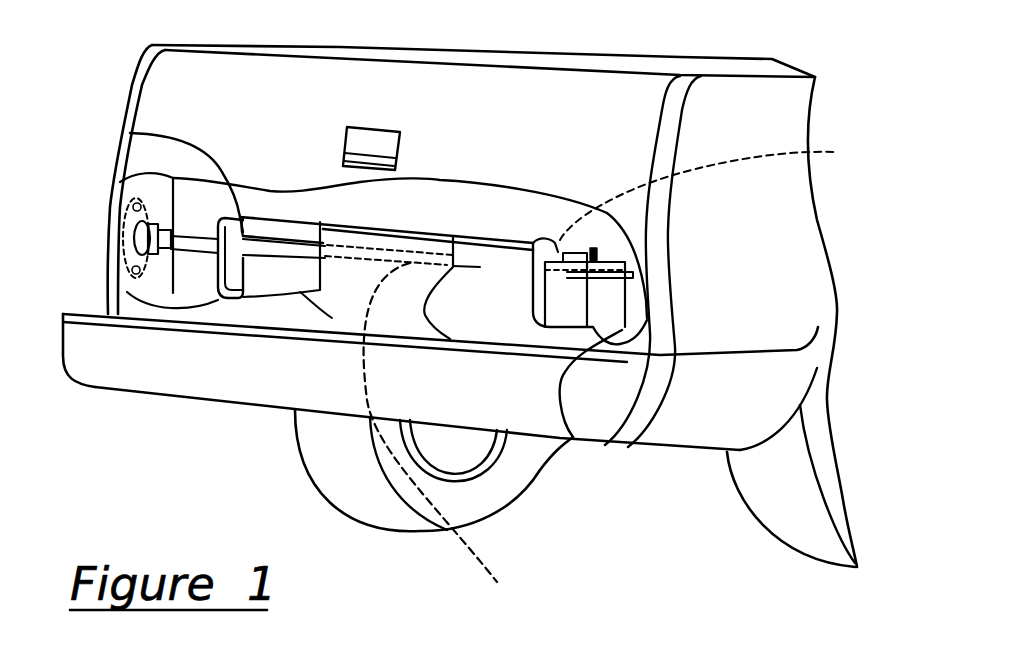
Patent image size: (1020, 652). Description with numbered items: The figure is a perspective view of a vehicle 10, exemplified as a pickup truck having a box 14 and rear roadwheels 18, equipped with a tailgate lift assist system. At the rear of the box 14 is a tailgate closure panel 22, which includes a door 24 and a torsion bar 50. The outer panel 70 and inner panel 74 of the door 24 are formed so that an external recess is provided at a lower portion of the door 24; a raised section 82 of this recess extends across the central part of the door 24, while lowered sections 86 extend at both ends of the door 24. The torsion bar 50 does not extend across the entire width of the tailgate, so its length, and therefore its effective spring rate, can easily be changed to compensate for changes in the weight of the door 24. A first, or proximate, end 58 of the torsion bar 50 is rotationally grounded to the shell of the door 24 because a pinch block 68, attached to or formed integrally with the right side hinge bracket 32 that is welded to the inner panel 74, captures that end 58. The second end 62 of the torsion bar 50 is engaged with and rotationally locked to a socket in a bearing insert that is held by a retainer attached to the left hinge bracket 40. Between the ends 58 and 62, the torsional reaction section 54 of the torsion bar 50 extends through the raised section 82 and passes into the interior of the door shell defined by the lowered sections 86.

The vehicle 10 is at (783, 50).
The box 14 is at (580, 58).
The rear roadwheels 18 is at (377, 500).
The tailgate closure panel 22 is at (166, 96).
The door 24 is at (265, 47).
The right side hinge bracket 32 is at (577, 435).
The left hinge bracket 40 is at (157, 395).
The torsion bar 50 is at (491, 240).
The torsional reaction section 54 is at (447, 437).
The first end 58 is at (717, 189).
The second end 62 is at (140, 197).
The pinch block 68 is at (612, 300).
The outer panel 70 is at (483, 147).
The inner panel 74 is at (130, 133).
The raised section 82 is at (281, 296).
The lowered sections 86 is at (535, 340).